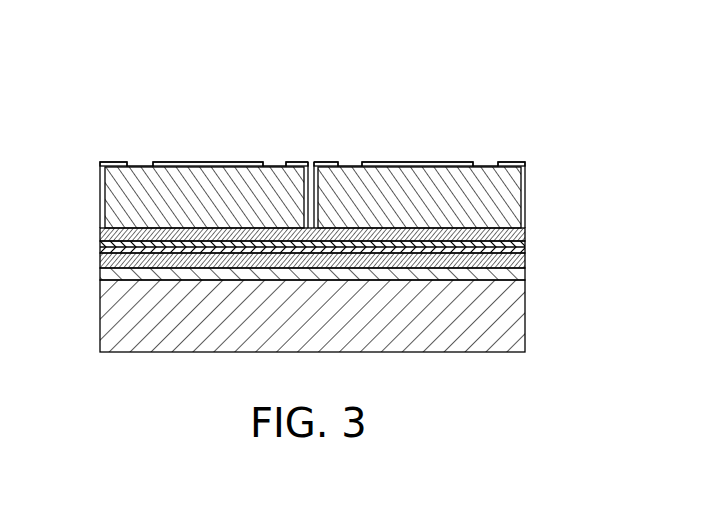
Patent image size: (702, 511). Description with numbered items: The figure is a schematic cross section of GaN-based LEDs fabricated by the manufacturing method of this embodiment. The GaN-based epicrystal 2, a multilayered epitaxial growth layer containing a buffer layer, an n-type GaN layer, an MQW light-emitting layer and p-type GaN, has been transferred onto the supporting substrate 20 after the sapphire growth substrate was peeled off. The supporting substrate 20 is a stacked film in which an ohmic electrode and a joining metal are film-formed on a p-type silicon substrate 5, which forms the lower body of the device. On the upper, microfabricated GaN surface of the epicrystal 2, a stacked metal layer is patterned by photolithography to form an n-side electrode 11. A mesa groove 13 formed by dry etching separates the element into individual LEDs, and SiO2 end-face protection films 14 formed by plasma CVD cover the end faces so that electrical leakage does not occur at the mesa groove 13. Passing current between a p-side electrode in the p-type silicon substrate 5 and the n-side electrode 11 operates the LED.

The GaN-based epicrystal 2 is at (497, 199).
The p-type silicon substrate 5 is at (497, 316).
The n-side electrode 11 is at (213, 162).
The mesa groove 13 is at (313, 199).
The end-face protection film 14 is at (113, 162).
The supporting substrate 20 is at (97, 270).